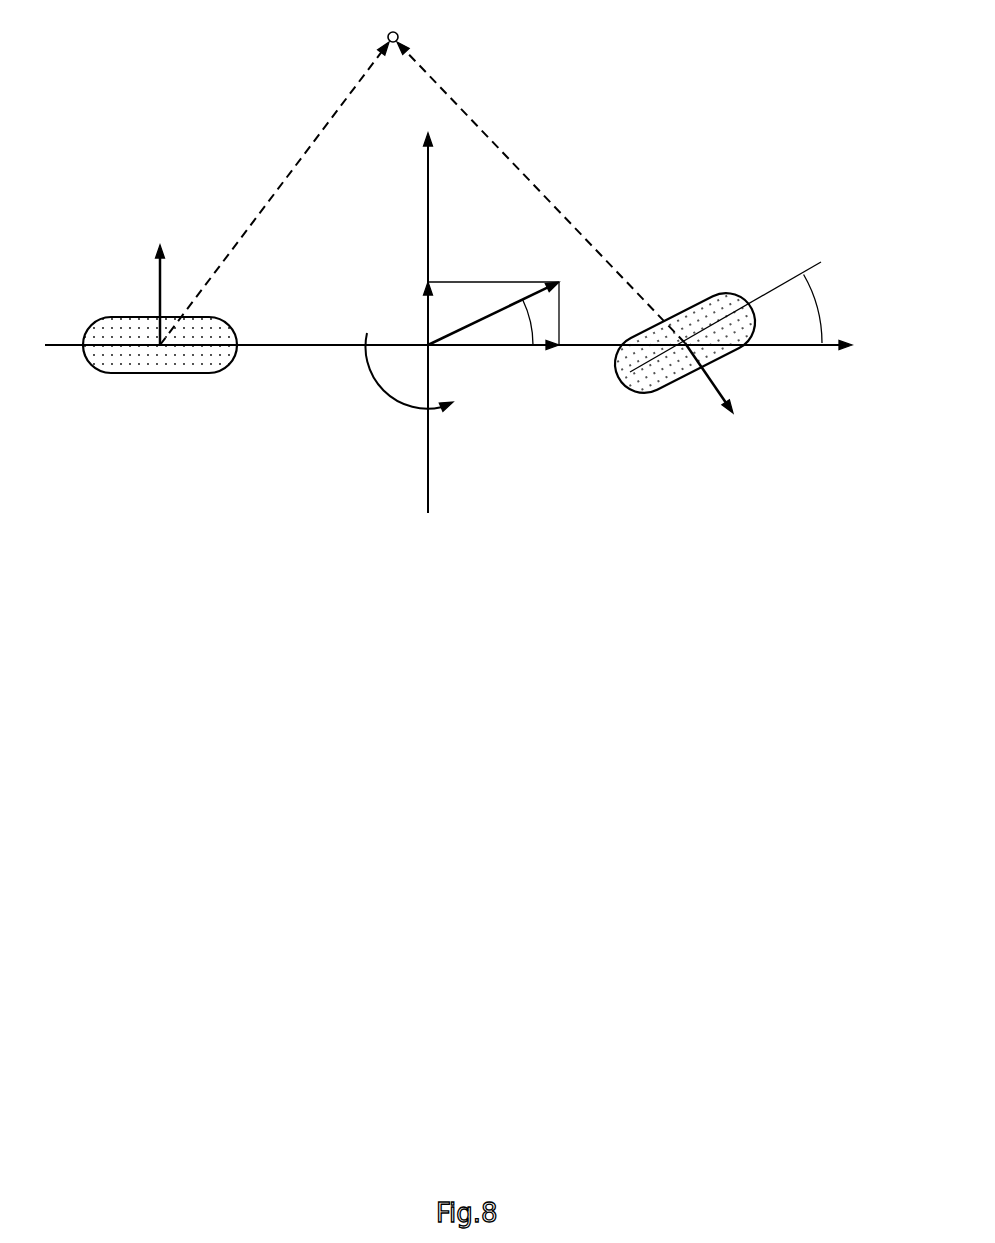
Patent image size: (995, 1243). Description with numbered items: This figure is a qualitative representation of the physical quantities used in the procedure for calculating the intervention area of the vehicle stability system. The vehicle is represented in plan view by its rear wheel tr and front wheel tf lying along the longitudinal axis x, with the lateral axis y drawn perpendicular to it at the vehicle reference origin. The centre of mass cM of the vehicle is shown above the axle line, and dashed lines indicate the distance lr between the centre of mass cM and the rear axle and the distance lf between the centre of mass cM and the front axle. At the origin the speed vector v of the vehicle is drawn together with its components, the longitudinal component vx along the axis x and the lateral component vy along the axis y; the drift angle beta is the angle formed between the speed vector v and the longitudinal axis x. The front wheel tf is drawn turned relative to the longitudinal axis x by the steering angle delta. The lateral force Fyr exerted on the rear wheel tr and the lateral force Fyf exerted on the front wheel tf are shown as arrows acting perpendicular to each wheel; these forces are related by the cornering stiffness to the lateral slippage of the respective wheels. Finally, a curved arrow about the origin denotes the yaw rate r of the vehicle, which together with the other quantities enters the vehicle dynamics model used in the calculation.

The rear wheel tr is at (92, 320).
The front wheel tf is at (643, 397).
The centre of mass cM is at (397, 21).
The distance between centre of mass and rear axle lr is at (274, 193).
The distance between centre of mass and front axle lf is at (541, 192).
The lateral force on rear wheel Fyr is at (161, 281).
The lateral force on front wheel Fyf is at (724, 400).
The speed vector v is at (501, 300).
The longitudinal speed component vx is at (493, 362).
The lateral speed component vy is at (409, 311).
The drift angle beta is at (537, 323).
The steering angle delta is at (735, 317).
The yaw rate r is at (409, 372).
The longitudinal axis x is at (460, 356).
The lateral axis y is at (417, 323).